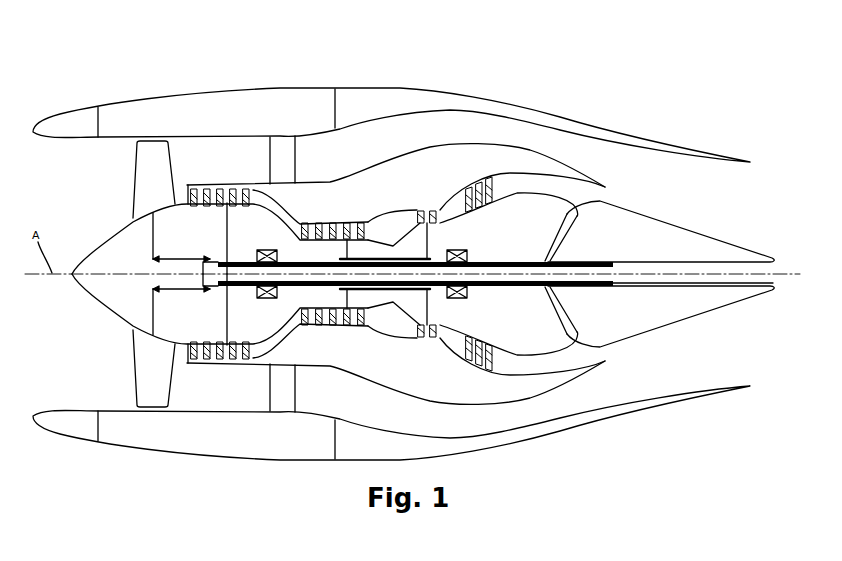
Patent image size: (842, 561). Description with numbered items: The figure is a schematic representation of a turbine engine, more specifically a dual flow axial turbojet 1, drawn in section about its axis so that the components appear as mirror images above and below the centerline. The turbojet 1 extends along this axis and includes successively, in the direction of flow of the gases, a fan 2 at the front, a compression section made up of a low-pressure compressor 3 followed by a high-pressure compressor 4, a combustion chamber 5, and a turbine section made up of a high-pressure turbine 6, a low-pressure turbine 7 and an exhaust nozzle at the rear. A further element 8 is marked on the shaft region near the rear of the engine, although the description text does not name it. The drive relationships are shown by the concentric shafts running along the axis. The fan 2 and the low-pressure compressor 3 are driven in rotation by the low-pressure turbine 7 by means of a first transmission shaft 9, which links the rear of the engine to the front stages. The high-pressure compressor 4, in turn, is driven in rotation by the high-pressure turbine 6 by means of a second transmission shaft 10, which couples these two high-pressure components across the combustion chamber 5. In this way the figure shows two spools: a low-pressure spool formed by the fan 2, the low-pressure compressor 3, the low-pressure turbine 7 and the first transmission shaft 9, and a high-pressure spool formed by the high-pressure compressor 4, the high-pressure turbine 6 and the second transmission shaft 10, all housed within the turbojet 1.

The dual flow axial turbojet 1 is at (603, 38).
The fan 2 is at (128, 177).
The low-pressure compressor 3 is at (234, 184).
The high-pressure compressor 4 is at (335, 218).
The combustion chamber 5 is at (388, 204).
The high-pressure turbine 6 is at (423, 199).
The low-pressure turbine 7 is at (477, 168).
The high-pressure shaft 8 is at (495, 272).
The first transmission shaft 9 is at (519, 286).
The second transmission shaft 10 is at (391, 258).